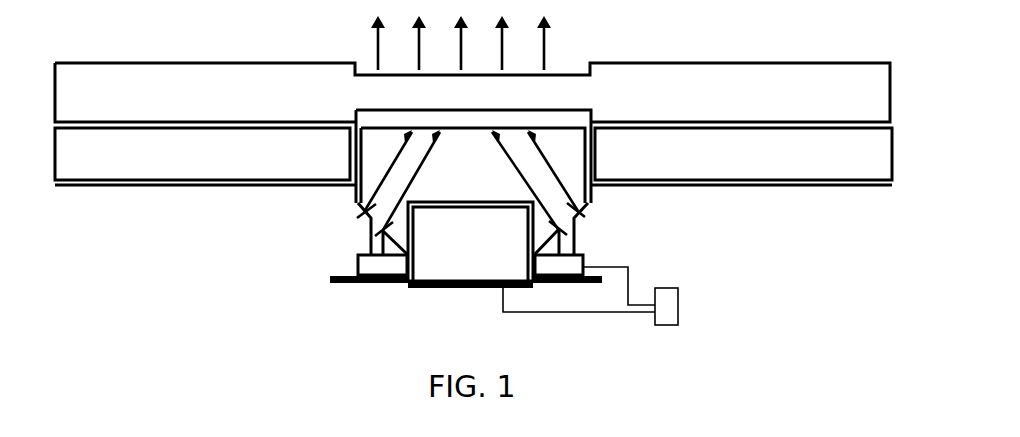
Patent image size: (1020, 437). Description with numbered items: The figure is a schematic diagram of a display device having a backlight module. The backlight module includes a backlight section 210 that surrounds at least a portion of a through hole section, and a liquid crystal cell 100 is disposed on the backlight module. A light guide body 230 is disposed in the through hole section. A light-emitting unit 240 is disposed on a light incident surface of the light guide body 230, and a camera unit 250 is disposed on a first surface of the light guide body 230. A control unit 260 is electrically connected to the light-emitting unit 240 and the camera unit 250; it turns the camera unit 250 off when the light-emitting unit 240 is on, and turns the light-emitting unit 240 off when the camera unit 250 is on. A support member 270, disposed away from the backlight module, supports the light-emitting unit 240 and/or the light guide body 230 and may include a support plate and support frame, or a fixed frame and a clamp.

The liquid crystal cell 100 is at (183, 82).
The backlight section 210 is at (118, 148).
The light guide body 230 is at (371, 174).
The light-emitting unit 240 is at (368, 262).
The camera unit 250 is at (475, 262).
The control unit 260 is at (671, 306).
The support member 270 is at (378, 283).